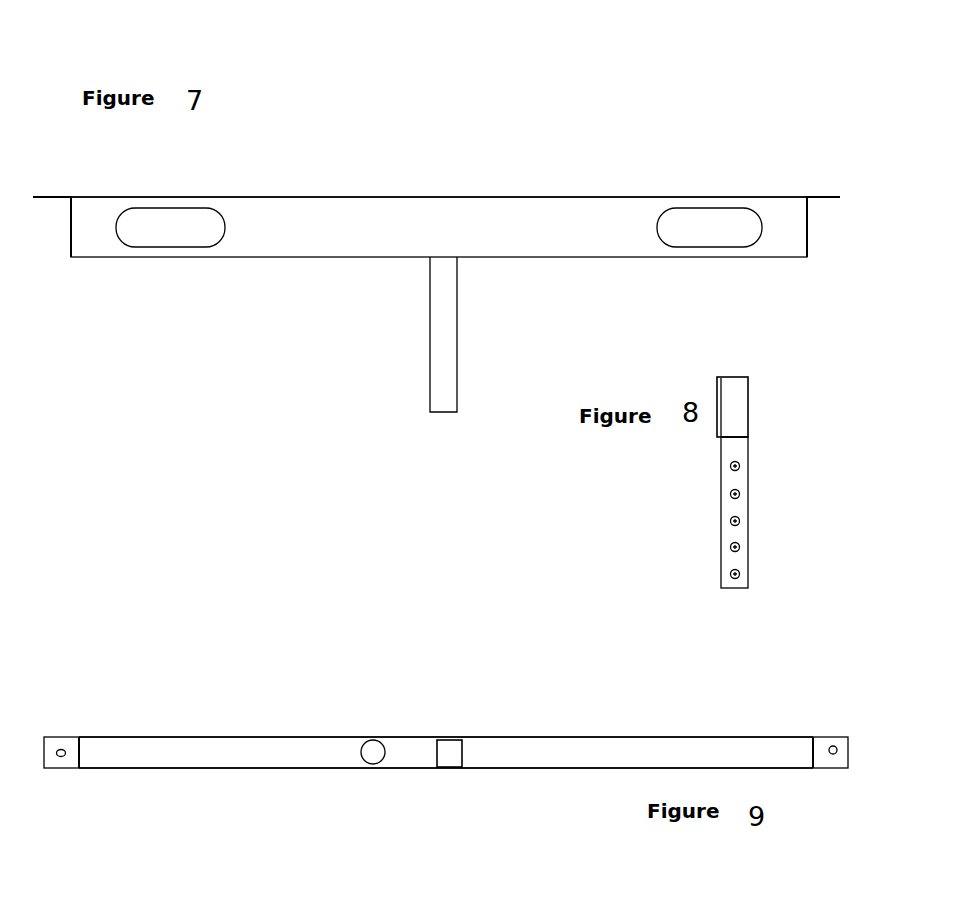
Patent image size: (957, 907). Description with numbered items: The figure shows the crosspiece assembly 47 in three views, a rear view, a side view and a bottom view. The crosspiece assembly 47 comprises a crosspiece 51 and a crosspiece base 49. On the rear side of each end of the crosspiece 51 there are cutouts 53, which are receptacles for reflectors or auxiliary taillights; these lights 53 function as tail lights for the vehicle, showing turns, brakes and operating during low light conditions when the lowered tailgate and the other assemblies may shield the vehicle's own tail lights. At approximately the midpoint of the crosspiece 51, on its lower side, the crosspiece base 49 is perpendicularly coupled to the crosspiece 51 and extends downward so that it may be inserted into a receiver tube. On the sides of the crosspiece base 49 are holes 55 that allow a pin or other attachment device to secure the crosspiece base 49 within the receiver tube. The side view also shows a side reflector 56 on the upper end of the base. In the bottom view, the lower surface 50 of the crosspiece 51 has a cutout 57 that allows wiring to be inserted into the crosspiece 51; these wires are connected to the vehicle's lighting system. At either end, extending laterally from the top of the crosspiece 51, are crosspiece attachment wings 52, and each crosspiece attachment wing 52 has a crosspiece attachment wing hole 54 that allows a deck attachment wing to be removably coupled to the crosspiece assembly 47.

In FIG. 7, the crosspiece assembly 47 is at (455, 158).
In FIG. 8, the crosspiece assembly 47 is at (702, 549).
In FIG. 9, the crosspiece assembly 47 is at (598, 708).
In FIG. 7, the crosspiece base 49 is at (443, 378).
In FIG. 8, the crosspiece base 49 is at (733, 443).
In FIG. 9, the crosspiece base 49 is at (452, 751).
In FIG. 9, the lower surface 50 is at (515, 753).
In FIG. 7, the crosspiece 51 is at (553, 225).
In FIG. 7, the crosspiece attachment wing 52 is at (48, 197).
In FIG. 9, the crosspiece attachment wing 52 is at (65, 737).
In FIG. 7, the cutout 53 is at (173, 228).
In FIG. 9, the crosspiece attachment wing hole 54 is at (831, 748).
In FIG. 8, the holes 55 is at (732, 468).
In FIG. 8, the side reflector 56 is at (735, 410).
In FIG. 9, the cutout 57 is at (368, 752).